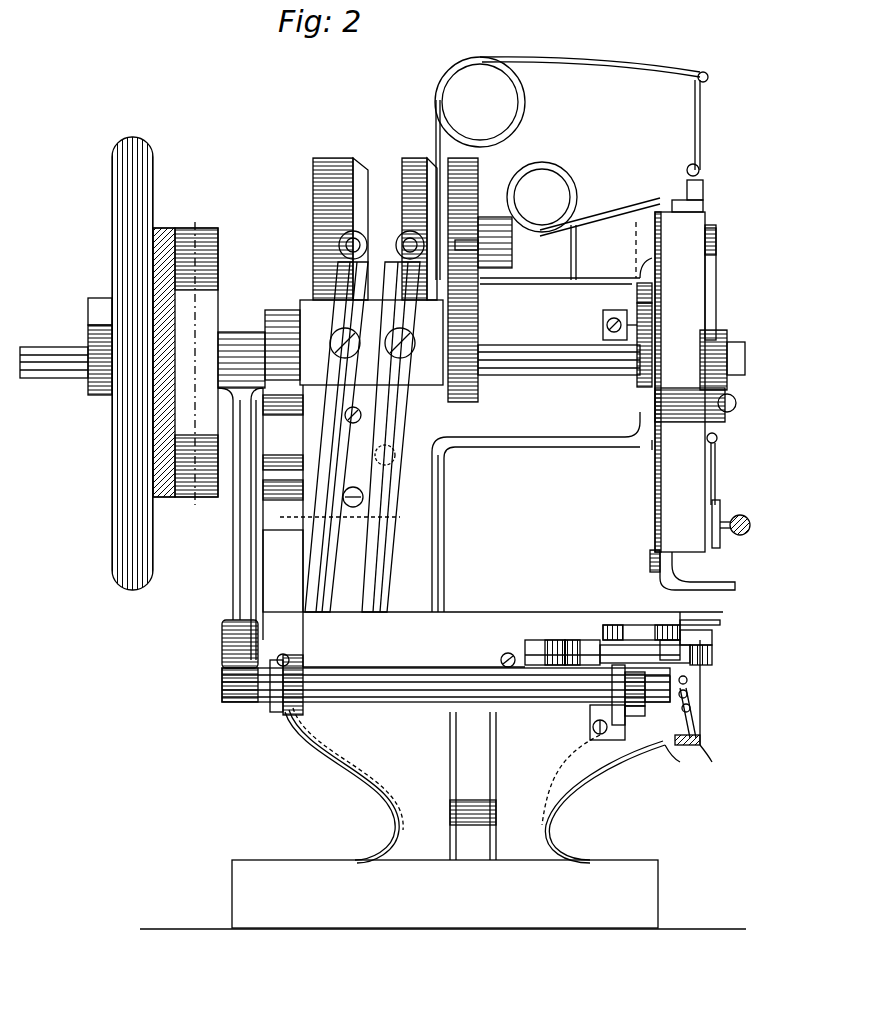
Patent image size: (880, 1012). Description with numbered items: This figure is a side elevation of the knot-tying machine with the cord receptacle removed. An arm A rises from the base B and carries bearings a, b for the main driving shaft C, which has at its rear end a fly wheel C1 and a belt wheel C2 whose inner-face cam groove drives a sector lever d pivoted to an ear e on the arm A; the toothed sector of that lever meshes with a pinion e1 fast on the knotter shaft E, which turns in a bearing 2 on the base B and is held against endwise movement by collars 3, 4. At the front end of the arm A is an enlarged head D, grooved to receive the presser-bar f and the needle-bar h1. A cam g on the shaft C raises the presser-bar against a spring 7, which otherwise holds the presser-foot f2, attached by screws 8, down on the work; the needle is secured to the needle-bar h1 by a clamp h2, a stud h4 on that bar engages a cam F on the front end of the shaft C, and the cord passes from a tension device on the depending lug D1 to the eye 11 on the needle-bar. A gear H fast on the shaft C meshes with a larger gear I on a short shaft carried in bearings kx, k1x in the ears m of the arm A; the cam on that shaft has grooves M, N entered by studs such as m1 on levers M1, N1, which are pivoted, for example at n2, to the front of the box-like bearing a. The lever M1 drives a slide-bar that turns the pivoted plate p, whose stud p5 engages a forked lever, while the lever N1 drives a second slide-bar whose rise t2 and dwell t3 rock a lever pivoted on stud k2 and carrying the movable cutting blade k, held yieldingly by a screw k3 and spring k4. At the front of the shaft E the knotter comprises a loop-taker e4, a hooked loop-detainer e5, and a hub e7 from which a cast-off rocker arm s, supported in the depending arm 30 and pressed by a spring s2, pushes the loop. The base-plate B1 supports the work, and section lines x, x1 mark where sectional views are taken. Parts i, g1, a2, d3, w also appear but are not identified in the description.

The main driving shaft C is at (62, 372).
The fly wheel C1 is at (112, 452).
The belt wheel C2 is at (206, 366).
The section line x is at (195, 228).
The bearing a is at (300, 318).
The pivot n2 is at (424, 350).
The cam groove M is at (335, 160).
The cam groove N is at (400, 160).
The ears or extensions m is at (338, 248).
The roller or stud m1 is at (345, 260).
The second lever i is at (407, 262).
The bearing kx is at (300, 244).
The bearing k1x is at (445, 235).
The gear I is at (476, 291).
The gear H is at (480, 283).
The needle-bar h1 is at (703, 190).
The spring 7 is at (648, 203).
The presser-bar f is at (703, 206).
The head D is at (660, 296).
The cam F is at (716, 280).
The section line x1 is at (640, 455).
The bearing sleeve g1 is at (637, 295).
The cam g is at (652, 368).
The bearing b is at (603, 332).
The roller or stud h4 is at (736, 403).
The clamp h2 is at (717, 440).
The eye 11 is at (715, 460).
The depending ear or lug D1 is at (700, 543).
The screws 8 is at (650, 560).
The presser-foot f2 is at (665, 582).
The arm A is at (545, 440).
The lever N1 is at (392, 484).
The ear e is at (287, 515).
The lever M1 is at (283, 571).
The sector lever d is at (233, 548).
The rod collar a2 is at (222, 648).
The base-plate B1 is at (513, 639).
The knotter shaft E is at (398, 702).
The pinion e1 is at (222, 702).
The rod clamp d3 is at (276, 712).
The collar 3 is at (303, 675).
The base B is at (362, 788).
The stud k2 is at (610, 625).
The spring k4 is at (668, 640).
The rise t2 is at (545, 638).
The dwell t3 is at (580, 638).
The movable cutting blade k is at (645, 649).
The guide w is at (712, 636).
The screw k3 is at (712, 652).
The plate p is at (630, 675).
The stud p5 is at (530, 668).
The bearing 2 is at (612, 712).
The collar 4 is at (635, 716).
The rocker arm s is at (682, 712).
The depending arm 30 is at (700, 738).
The spring s2 is at (688, 762).
The hub-like portion e7 is at (700, 682).
The loop-detainer e5 is at (700, 695).
The loop-taker e4 is at (700, 710).